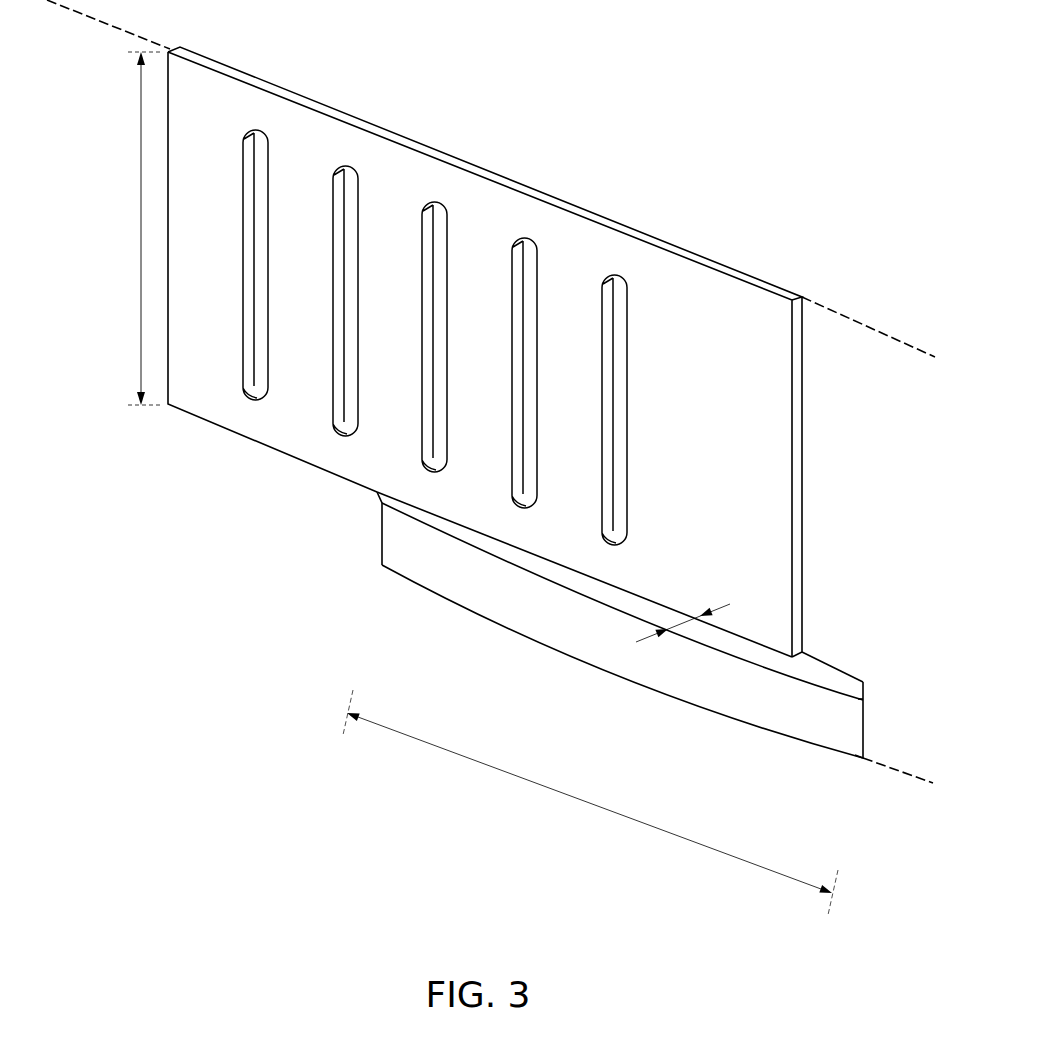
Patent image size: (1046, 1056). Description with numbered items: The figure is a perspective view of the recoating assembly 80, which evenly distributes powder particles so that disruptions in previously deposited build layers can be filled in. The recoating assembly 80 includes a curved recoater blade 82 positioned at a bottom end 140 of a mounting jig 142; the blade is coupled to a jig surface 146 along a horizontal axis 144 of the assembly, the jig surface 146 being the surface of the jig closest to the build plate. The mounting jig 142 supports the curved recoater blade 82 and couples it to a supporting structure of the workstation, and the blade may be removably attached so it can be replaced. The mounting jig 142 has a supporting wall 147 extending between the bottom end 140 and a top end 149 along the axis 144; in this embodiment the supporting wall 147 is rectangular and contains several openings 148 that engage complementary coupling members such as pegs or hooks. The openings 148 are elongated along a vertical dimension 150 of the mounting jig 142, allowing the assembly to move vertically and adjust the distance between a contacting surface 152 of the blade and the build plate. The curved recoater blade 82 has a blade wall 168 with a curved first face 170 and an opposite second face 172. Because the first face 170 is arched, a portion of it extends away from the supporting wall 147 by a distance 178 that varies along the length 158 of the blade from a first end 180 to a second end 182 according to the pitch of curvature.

The recoating assembly 80 is at (803, 256).
The curved recoater blade 82 is at (845, 728).
The bottom end 140 is at (254, 458).
The mounting jig 142 is at (800, 437).
The axis 144 is at (888, 338).
The jig surface 146 is at (812, 657).
The supporting wall 147 is at (222, 105).
The openings 148 is at (617, 295).
The top end 149 is at (456, 152).
The dimension 150 is at (141, 229).
The contacting surface 152 is at (844, 771).
The length 158 is at (582, 808).
The blade wall 168 is at (720, 713).
The first face 170 is at (584, 645).
The second face 172 is at (831, 656).
The distance 178 is at (694, 624).
The first end 180 is at (868, 700).
The second end 182 is at (381, 538).